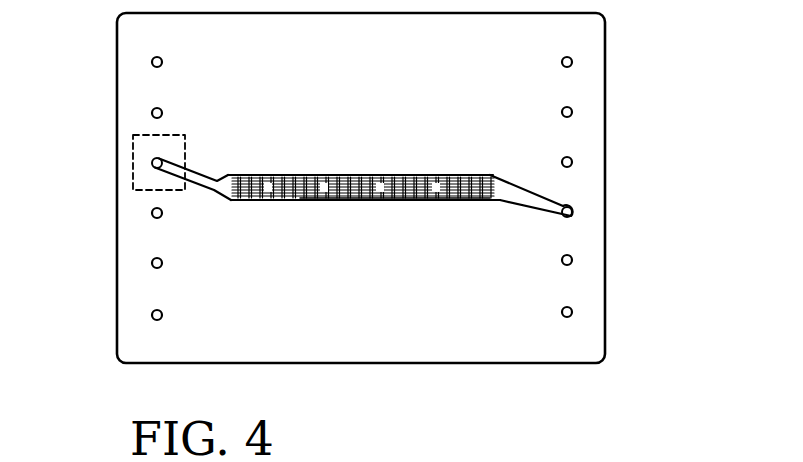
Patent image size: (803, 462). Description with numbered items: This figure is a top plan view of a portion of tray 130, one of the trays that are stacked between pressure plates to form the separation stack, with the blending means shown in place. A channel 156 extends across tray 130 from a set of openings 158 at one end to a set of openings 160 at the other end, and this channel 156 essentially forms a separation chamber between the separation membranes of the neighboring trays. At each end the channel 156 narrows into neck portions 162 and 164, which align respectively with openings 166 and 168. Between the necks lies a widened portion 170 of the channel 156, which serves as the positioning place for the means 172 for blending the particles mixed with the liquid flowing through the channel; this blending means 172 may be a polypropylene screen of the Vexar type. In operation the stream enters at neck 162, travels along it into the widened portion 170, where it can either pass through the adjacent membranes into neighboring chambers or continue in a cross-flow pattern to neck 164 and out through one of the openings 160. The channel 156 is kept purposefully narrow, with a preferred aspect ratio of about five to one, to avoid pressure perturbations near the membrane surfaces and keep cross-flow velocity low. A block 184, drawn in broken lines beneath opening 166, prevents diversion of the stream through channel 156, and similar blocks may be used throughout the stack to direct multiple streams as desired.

The tray 130 is at (377, 364).
The channel 156 is at (287, 170).
The set of openings 158 is at (143, 279).
The set of openings 160 is at (580, 103).
The neck portion 162 is at (196, 172).
The neck portion 164 is at (548, 198).
The opening 166 is at (152, 166).
The opening 168 is at (573, 216).
The widened portion 170 is at (369, 173).
The blending means 172 is at (421, 198).
The block 184 is at (130, 143).